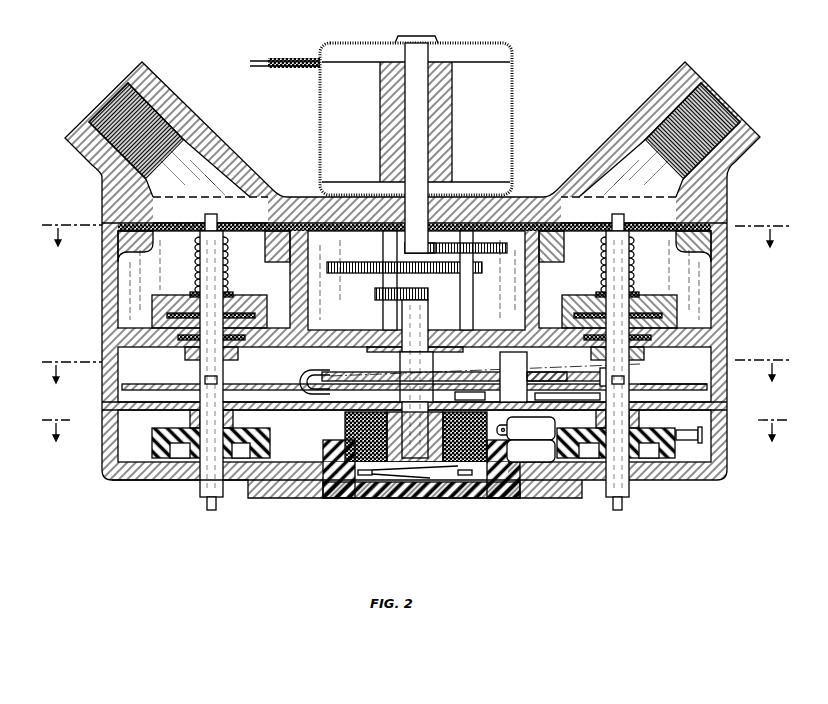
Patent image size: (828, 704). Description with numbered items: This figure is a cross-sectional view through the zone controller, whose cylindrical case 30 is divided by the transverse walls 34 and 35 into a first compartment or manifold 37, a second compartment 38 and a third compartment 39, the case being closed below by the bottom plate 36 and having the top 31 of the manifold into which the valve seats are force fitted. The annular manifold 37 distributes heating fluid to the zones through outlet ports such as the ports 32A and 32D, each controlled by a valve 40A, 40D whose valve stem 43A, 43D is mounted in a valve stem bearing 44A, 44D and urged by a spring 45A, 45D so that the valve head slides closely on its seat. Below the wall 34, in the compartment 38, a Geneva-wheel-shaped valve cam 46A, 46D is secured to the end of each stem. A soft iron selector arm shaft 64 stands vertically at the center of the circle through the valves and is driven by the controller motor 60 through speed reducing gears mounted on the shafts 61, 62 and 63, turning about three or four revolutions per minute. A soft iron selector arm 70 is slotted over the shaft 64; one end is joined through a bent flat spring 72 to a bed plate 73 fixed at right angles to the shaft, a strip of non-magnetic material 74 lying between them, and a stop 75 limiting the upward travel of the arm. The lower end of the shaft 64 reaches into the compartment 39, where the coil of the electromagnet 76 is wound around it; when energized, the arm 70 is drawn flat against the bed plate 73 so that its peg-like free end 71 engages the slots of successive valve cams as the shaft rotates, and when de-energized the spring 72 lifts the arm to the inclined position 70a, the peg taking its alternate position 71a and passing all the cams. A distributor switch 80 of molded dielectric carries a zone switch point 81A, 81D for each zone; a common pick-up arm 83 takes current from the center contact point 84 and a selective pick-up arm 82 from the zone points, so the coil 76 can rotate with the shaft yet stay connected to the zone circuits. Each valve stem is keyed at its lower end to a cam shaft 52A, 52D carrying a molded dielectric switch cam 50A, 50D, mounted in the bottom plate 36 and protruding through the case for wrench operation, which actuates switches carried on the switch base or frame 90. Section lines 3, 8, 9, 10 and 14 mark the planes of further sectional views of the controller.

The cylindrical case 30 is at (102, 283).
The top plate 31 is at (286, 197).
The outlet port 32A is at (176, 96).
The outlet port 32D is at (735, 166).
The transverse wall 34 is at (102, 324).
The transverse wall 35 is at (108, 420).
The bottom plate 36 is at (126, 482).
The first compartment or manifold 37 is at (115, 275).
The second compartment 38 is at (113, 375).
The third compartment 39 is at (120, 448).
The valve 40A is at (152, 232).
The valve 40D is at (664, 228).
The valve stem 43A is at (223, 272).
The valve stem 43D is at (606, 280).
The valve stem bearing 44A is at (238, 348).
The valve stem bearing 44D is at (636, 350).
The spring 45A is at (230, 243).
The spring 45D is at (606, 236).
The valve cam 46A is at (192, 392).
The valve cam 46D is at (692, 390).
The switch cam 50A is at (270, 442).
The switch cam 50D is at (616, 435).
The cam shaft 52A is at (232, 424).
The cam shaft 52D is at (600, 414).
The controller motor 60 is at (512, 102).
The gear shaft 61 is at (426, 245).
The gear shaft 62 is at (472, 245).
The gear shaft 63 is at (385, 246).
The selector arm shaft 64 is at (428, 322).
The selector arm 70 is at (584, 372).
The selector arm position 70a is at (566, 355).
The free end of selector arm 71 is at (566, 394).
The alternate peg position 71a is at (618, 375).
The bent flat spring 72 is at (324, 372).
The bed plate 73 is at (466, 404).
The strip of non-magnetic material 74 is at (506, 435).
The stop 75 is at (500, 364).
The electromagnet 76 is at (345, 432).
The distributor switch 80 is at (478, 500).
The zone switch point 81A is at (372, 473).
The zone switch point 81D is at (458, 472).
The selective pick-up arm 82 is at (345, 492).
The common pick-up arm 83 is at (415, 498).
The center contact point 84 is at (388, 498).
The switch base or frame 90 is at (553, 427).
The section line 3 is at (413, 226).
The section line 8 is at (412, 246).
The section line 9 is at (413, 361).
The section line 10 is at (414, 381).
The section line 14 is at (416, 439).